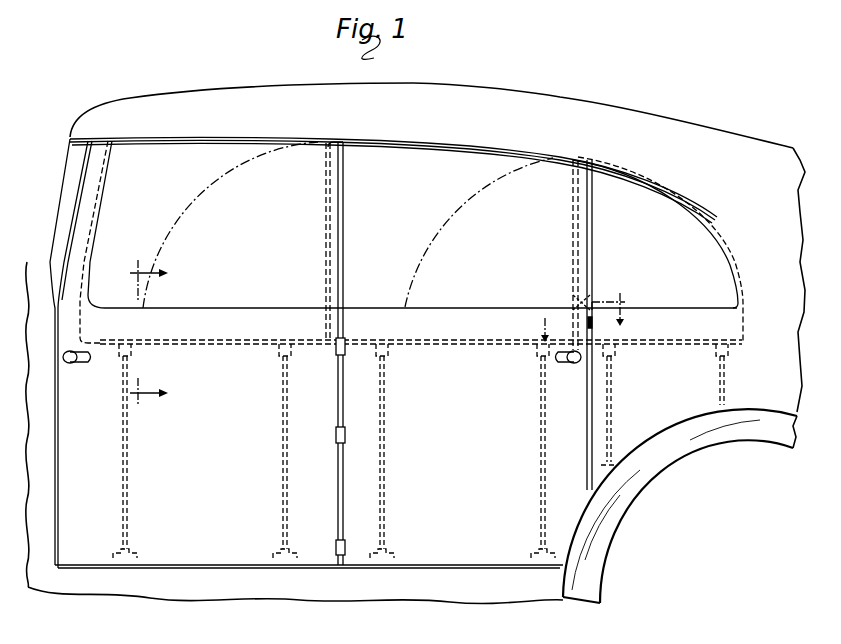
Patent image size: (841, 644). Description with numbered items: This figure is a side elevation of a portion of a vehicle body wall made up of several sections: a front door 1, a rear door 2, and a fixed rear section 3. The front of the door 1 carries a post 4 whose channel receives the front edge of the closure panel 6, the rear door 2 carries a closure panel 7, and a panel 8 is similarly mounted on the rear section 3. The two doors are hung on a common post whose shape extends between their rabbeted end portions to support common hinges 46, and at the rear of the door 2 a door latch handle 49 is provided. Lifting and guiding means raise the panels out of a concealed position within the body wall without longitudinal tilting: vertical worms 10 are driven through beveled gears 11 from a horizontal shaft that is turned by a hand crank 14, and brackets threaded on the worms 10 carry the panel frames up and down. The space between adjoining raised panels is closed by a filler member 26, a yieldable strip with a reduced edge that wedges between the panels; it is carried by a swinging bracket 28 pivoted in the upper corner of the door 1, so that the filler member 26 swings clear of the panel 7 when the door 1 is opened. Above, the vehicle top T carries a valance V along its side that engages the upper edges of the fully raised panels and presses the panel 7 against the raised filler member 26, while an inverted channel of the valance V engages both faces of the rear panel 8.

The front door 1 is at (195, 414).
The rear door 2 is at (465, 414).
The fixed rear section 3 is at (692, 373).
The post 4 is at (89, 242).
The closure panel 6 is at (314, 275).
The closure panel 7 is at (253, 385).
The panel 8 is at (354, 168).
The vertical worms 10 is at (622, 409).
The beveled gears 11 is at (581, 317).
The hand crank 14 is at (163, 333).
The filler member 26 is at (344, 217).
The swinging bracket 28 is at (560, 303).
The common hinges 46 is at (345, 441).
The door latch handle 49 is at (574, 365).
The top T is at (512, 99).
The valance V is at (549, 157).